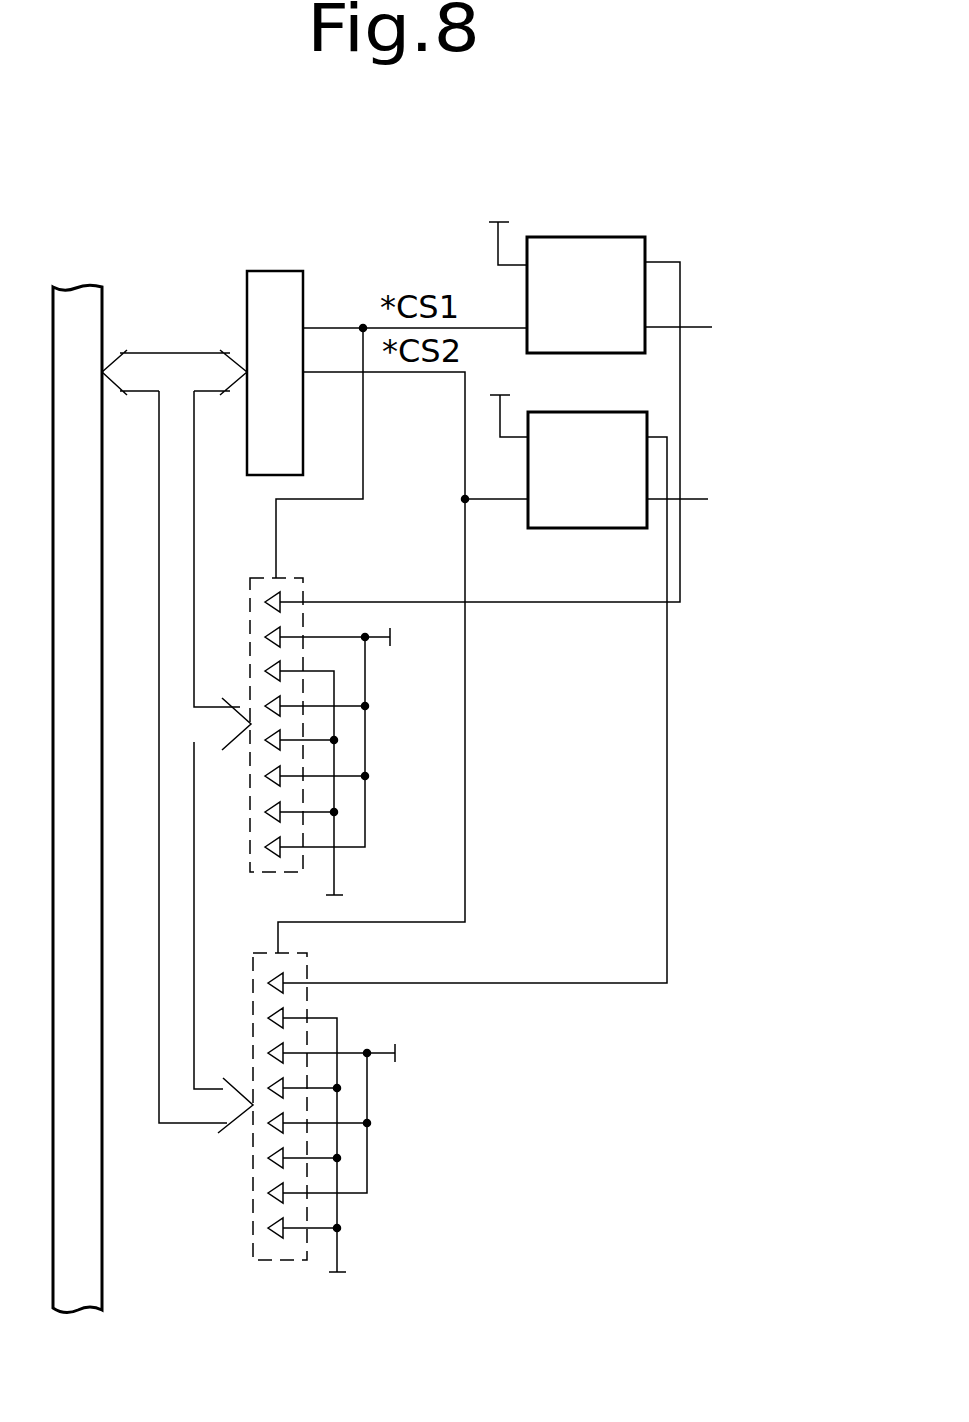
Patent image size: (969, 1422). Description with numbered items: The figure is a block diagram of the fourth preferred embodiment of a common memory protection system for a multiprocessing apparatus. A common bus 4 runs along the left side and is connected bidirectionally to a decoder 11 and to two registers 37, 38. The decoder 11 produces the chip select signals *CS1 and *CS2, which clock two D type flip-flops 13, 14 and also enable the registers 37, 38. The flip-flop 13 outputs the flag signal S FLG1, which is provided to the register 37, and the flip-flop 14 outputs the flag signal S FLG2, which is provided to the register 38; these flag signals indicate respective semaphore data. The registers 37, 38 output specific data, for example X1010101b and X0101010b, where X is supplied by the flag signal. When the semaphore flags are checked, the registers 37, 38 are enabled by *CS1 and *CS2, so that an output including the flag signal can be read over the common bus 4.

The common bus 4 is at (102, 762).
The decoder 11 is at (282, 270).
The D type flip-flop 13 is at (605, 237).
The D type flip-flop 14 is at (602, 412).
The register 37 is at (276, 578).
The register 38 is at (278, 953).